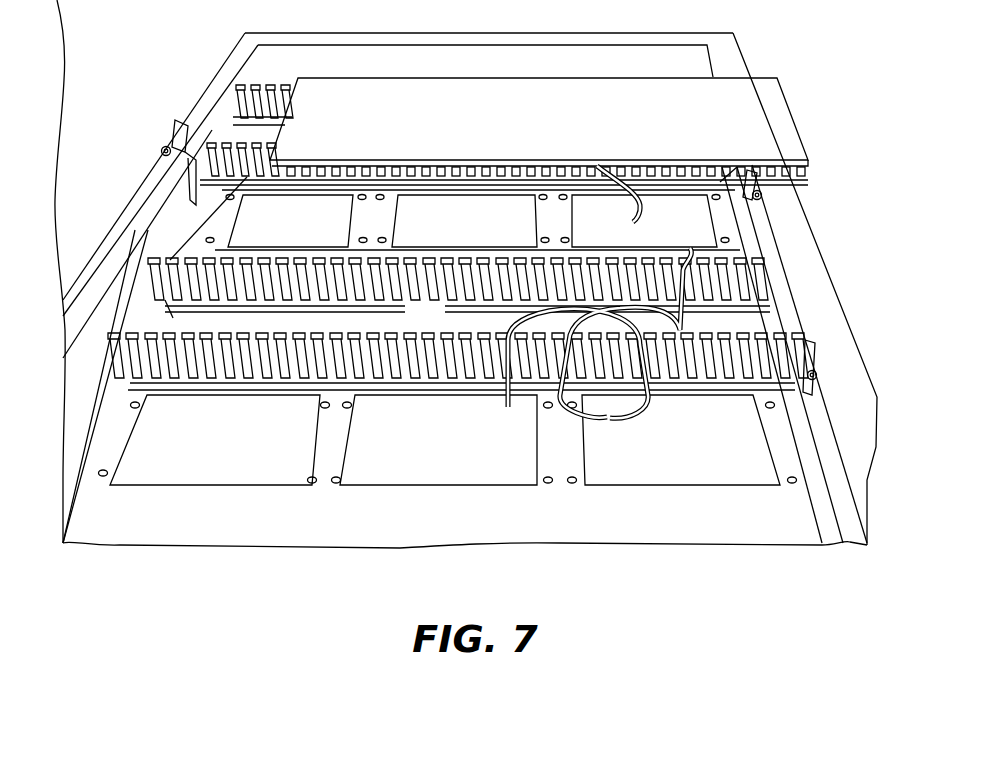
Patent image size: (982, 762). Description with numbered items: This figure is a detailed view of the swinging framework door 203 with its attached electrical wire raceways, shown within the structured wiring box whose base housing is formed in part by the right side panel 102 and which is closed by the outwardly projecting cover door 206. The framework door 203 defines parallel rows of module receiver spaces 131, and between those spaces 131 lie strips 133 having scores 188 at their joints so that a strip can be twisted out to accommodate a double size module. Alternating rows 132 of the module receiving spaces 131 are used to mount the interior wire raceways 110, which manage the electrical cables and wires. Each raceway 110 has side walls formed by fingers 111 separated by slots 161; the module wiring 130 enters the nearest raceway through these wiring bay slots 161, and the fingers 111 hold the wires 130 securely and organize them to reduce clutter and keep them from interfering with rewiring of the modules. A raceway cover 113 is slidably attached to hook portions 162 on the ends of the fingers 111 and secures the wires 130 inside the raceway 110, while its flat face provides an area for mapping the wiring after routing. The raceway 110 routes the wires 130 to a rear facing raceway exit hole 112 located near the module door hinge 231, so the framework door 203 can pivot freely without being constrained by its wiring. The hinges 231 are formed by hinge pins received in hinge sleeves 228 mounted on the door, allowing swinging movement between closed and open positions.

The right side panel 102 is at (399, 74).
The interior wire raceway 110 is at (455, 182).
The fingers 111 is at (335, 300).
The rear facing raceway exit hole 112 is at (733, 327).
The raceway cover 113 is at (499, 130).
The module wiring 130 is at (630, 218).
The module receiver spaces 131 is at (198, 453).
The alternating rows 132 is at (167, 320).
The strips 133 is at (332, 246).
The slots 161 is at (200, 357).
The hook portions 162 is at (178, 258).
The scores 188 is at (240, 193).
The framework door 203 is at (421, 527).
The cover door 206 is at (121, 58).
The hinge sleeves 228 is at (178, 122).
The hinges 231 is at (160, 146).